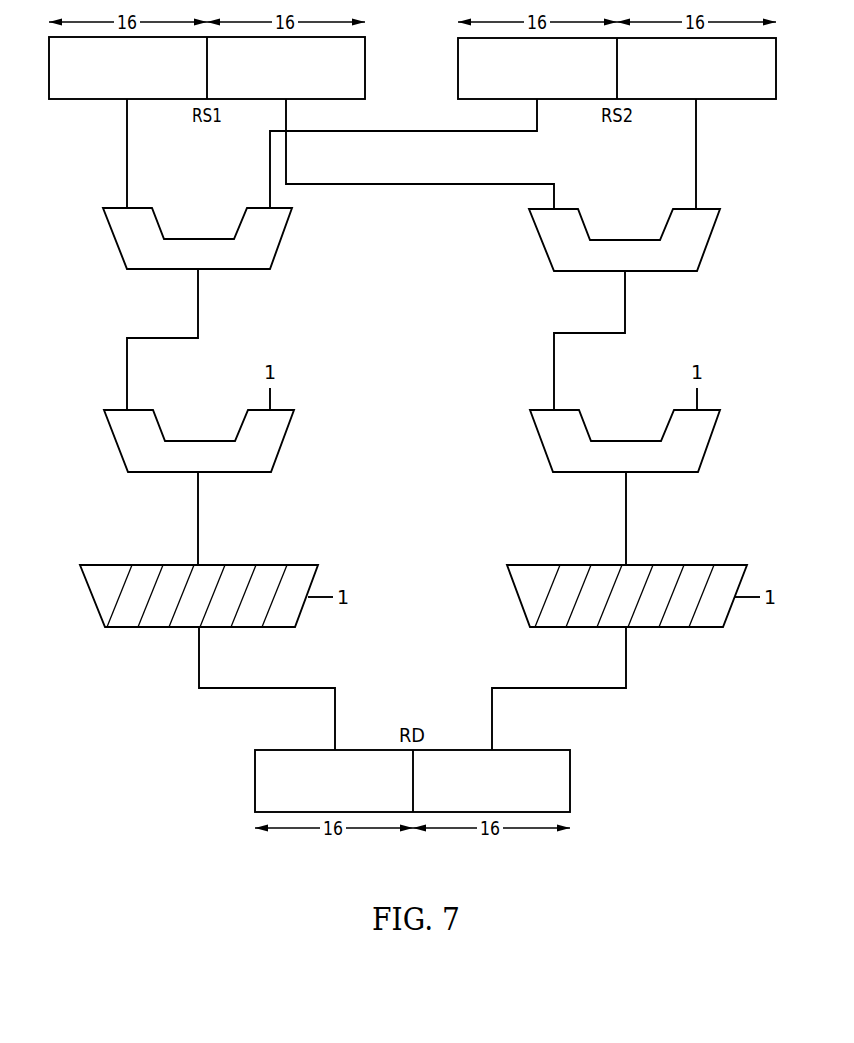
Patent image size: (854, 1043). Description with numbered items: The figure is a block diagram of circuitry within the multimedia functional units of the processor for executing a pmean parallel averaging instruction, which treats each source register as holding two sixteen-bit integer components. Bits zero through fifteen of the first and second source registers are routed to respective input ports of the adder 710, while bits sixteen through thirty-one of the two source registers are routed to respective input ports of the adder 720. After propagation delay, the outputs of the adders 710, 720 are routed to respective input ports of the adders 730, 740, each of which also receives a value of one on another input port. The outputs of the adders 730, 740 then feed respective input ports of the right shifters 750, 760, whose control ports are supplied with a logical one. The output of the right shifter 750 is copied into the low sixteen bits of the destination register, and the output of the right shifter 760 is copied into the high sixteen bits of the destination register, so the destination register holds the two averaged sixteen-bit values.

The adder 710 is at (258, 270).
The adder 720 is at (685, 272).
The adder 730 is at (260, 473).
The adder 740 is at (687, 473).
The right shifter 750 is at (277, 628).
The right shifter 760 is at (703, 628).